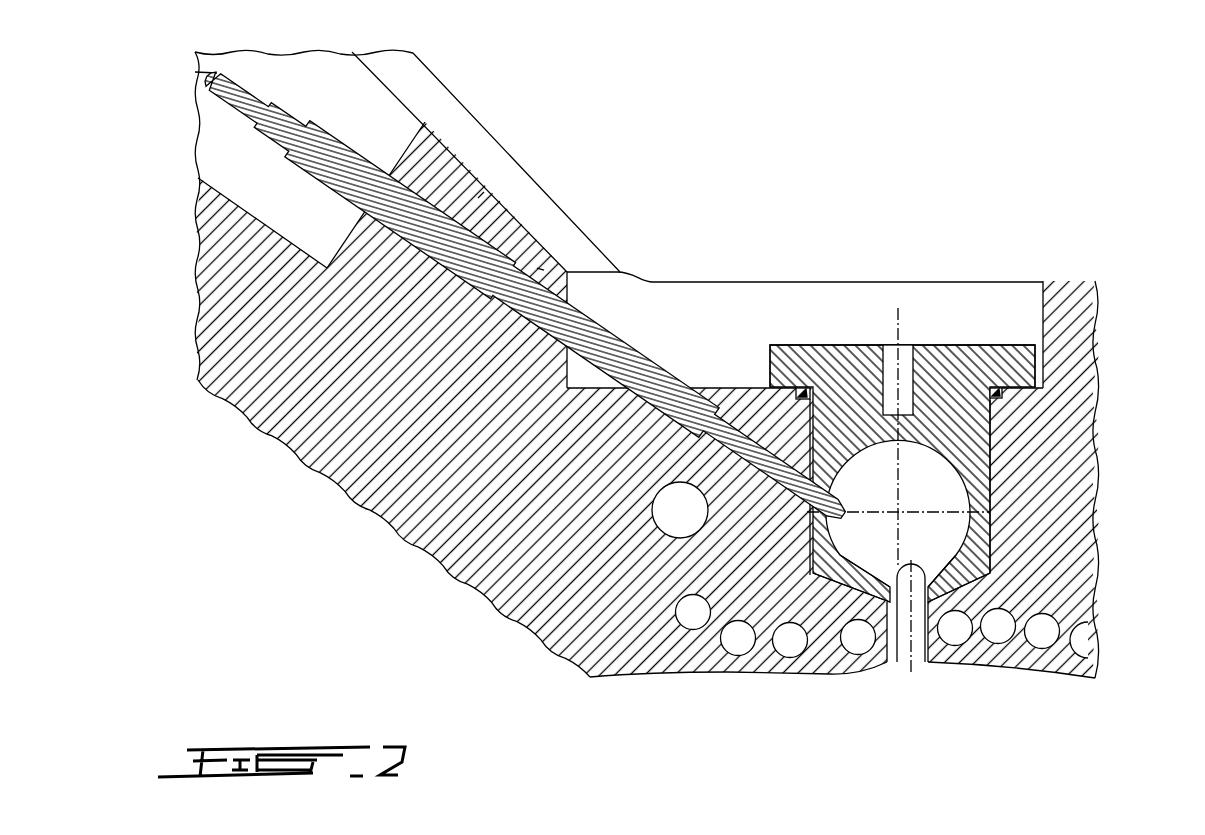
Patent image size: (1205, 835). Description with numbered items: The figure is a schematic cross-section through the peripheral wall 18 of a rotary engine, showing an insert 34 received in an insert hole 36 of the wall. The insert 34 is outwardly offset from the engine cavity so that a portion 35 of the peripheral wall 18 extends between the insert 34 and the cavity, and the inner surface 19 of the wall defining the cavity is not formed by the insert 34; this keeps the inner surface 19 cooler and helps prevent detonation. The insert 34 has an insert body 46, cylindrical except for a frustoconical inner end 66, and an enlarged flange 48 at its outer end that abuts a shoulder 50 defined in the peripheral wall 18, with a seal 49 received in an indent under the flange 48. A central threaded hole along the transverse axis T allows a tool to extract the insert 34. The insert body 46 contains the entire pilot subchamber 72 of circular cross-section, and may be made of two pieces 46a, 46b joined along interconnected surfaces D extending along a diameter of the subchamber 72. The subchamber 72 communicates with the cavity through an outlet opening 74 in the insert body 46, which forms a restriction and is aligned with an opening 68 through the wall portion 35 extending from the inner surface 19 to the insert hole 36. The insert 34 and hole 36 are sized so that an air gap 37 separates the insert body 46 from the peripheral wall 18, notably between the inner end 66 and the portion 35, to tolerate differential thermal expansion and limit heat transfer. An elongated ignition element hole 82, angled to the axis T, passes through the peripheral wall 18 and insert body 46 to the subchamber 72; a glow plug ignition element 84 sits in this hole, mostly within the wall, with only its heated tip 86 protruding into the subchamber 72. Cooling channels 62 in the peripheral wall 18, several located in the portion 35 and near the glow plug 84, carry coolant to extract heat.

The peripheral wall 18 is at (260, 342).
The inner surface 19 is at (1063, 675).
The insert 34 is at (992, 345).
The portion of the peripheral wall 35 is at (935, 647).
The insert hole 36 is at (813, 412).
The air gap 37 is at (818, 522).
The insert body 46 is at (967, 427).
The first piece of the insert body 46a is at (977, 462).
The second piece of the insert body 46b is at (987, 527).
The flange 48 is at (1020, 362).
The seal 49 is at (1002, 389).
The shoulder 50 is at (738, 388).
The cooling channels 62 is at (738, 638).
The inner end 66 is at (955, 575).
The opening 68 is at (898, 640).
The pilot subchamber 72 is at (940, 490).
The outlet opening 74 is at (968, 548).
The ignition element elongated hole 82 is at (537, 268).
The ignition element 84 is at (478, 198).
The tip 86 is at (847, 519).
The transverse axis T is at (898, 335).
The interconnected surfaces D is at (875, 512).